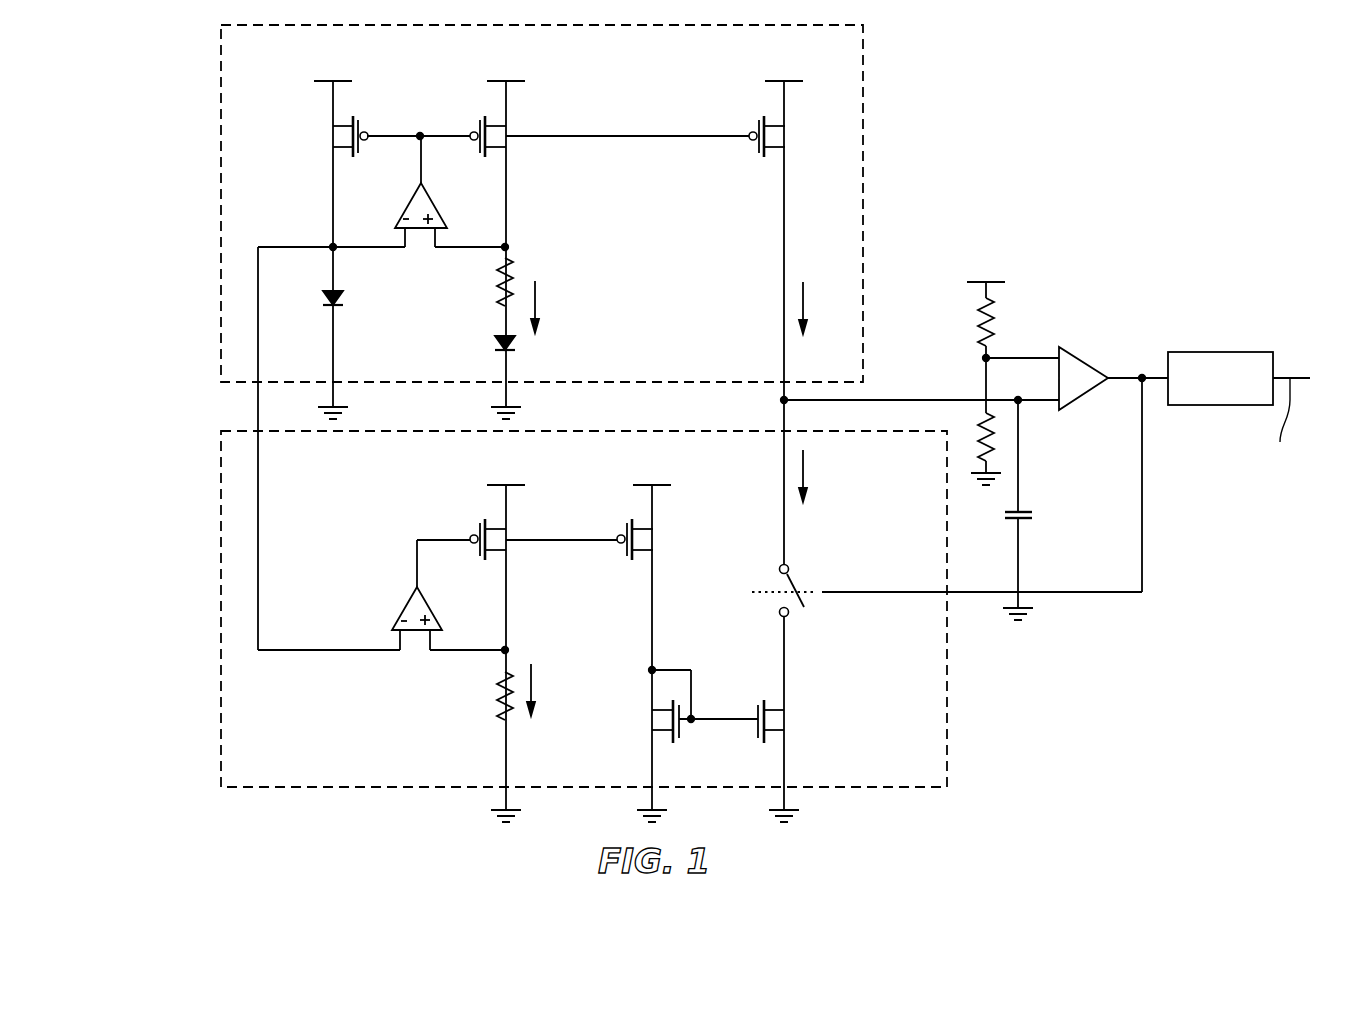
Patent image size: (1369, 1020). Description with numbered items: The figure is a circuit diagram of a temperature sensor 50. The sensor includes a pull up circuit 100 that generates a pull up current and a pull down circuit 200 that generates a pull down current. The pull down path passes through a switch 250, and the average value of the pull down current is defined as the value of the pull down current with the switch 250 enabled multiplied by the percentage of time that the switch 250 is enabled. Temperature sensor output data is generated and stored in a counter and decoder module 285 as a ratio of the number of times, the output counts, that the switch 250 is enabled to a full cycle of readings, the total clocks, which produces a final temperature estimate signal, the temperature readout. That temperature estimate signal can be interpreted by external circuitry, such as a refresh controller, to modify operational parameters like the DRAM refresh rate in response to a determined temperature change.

The temperature sensor 50 is at (147, 153).
The pull up circuit 100 is at (863, 45).
The pull down circuit 200 is at (947, 732).
The switch 250 is at (782, 578).
The counter and decoder module 285 is at (1217, 352).